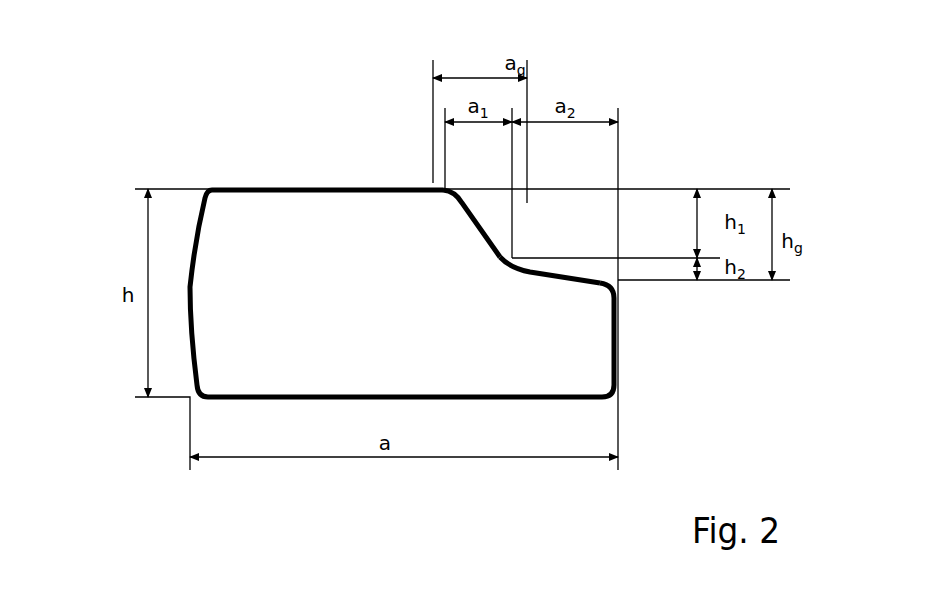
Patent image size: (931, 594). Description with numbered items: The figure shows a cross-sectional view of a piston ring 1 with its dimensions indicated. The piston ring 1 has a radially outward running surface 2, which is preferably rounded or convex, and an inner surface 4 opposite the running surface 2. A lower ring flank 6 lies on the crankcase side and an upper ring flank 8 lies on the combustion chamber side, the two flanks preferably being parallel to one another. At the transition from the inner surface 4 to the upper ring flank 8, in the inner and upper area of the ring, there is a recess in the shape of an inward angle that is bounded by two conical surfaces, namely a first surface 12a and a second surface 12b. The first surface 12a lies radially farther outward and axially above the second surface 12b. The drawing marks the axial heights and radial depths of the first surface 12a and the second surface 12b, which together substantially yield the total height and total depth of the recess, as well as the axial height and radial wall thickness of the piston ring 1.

The piston ring 1 is at (397, 321).
The running surface 2 is at (188, 283).
The inner surface 4 is at (617, 365).
The lower ring flank 6 is at (320, 398).
The upper ring flank 8 is at (291, 189).
The first surface 12a is at (470, 221).
The second surface 12b is at (563, 277).